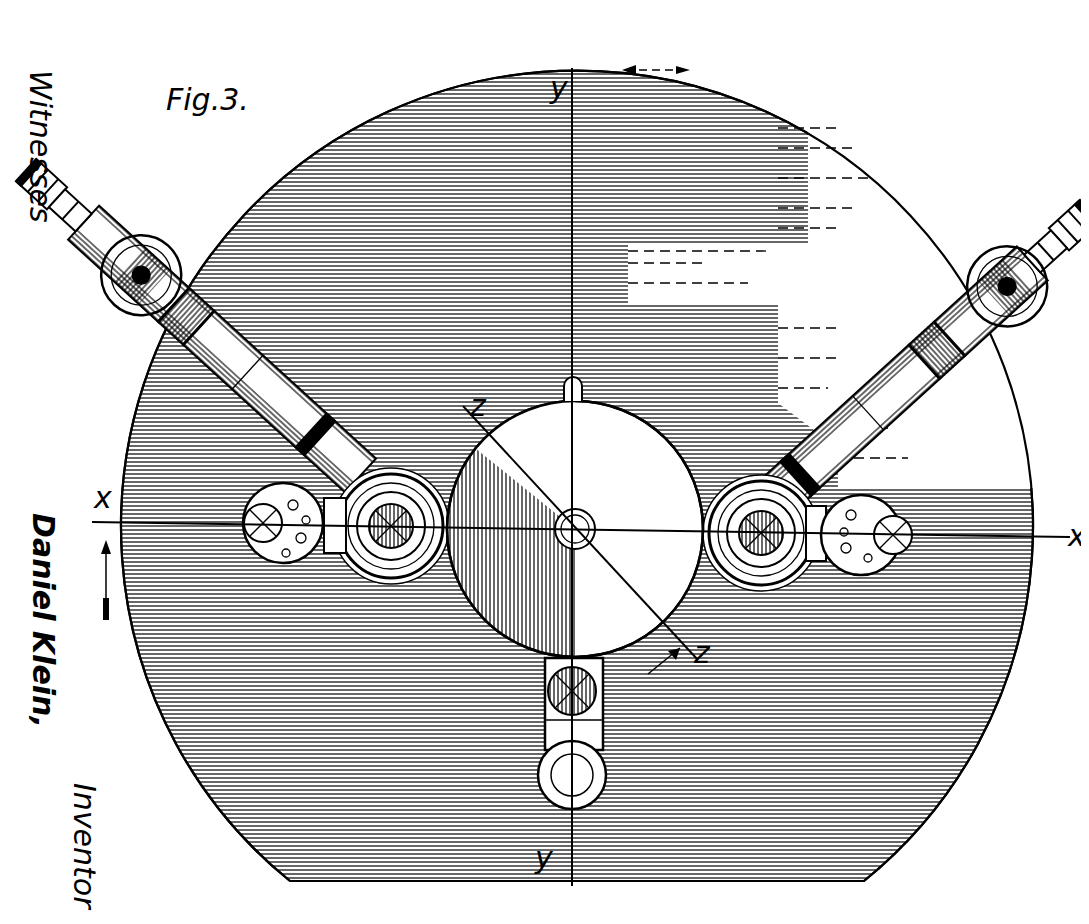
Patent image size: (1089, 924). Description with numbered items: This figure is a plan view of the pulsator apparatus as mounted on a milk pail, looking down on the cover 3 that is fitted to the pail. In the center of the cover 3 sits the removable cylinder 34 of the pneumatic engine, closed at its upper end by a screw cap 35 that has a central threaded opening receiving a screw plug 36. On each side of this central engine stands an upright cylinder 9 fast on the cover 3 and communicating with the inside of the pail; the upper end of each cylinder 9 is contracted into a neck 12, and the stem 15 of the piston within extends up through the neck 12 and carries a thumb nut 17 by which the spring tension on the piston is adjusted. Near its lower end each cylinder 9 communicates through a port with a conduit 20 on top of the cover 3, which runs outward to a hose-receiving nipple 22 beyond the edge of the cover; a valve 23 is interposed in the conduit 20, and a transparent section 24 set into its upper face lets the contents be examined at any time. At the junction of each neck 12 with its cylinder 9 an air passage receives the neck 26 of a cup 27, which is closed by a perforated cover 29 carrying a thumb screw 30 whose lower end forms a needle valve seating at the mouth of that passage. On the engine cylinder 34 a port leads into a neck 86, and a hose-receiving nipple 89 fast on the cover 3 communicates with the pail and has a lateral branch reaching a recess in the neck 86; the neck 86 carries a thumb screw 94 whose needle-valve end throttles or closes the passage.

The cover 3 is at (880, 205).
The upright cylinder 9 is at (383, 466).
The neck 12 is at (385, 572).
The stem 15 is at (802, 556).
The thumb nut 17 is at (395, 492).
The conduit 20 is at (176, 300).
The hose-receiving nipple 22 is at (72, 185).
The valve 23 is at (136, 250).
The transparent section 24 is at (248, 345).
The neck 26 is at (322, 548).
The cup 27 is at (340, 450).
The perforated cover 29 is at (262, 552).
The thumb screw 30 is at (248, 500).
The cylinder 34 is at (576, 372).
The screw cap 35 is at (622, 420).
The screw plug 36 is at (582, 515).
The neck 86 is at (610, 685).
The hose-receiving nipple 89 is at (597, 755).
The thumb screw 94 is at (536, 690).